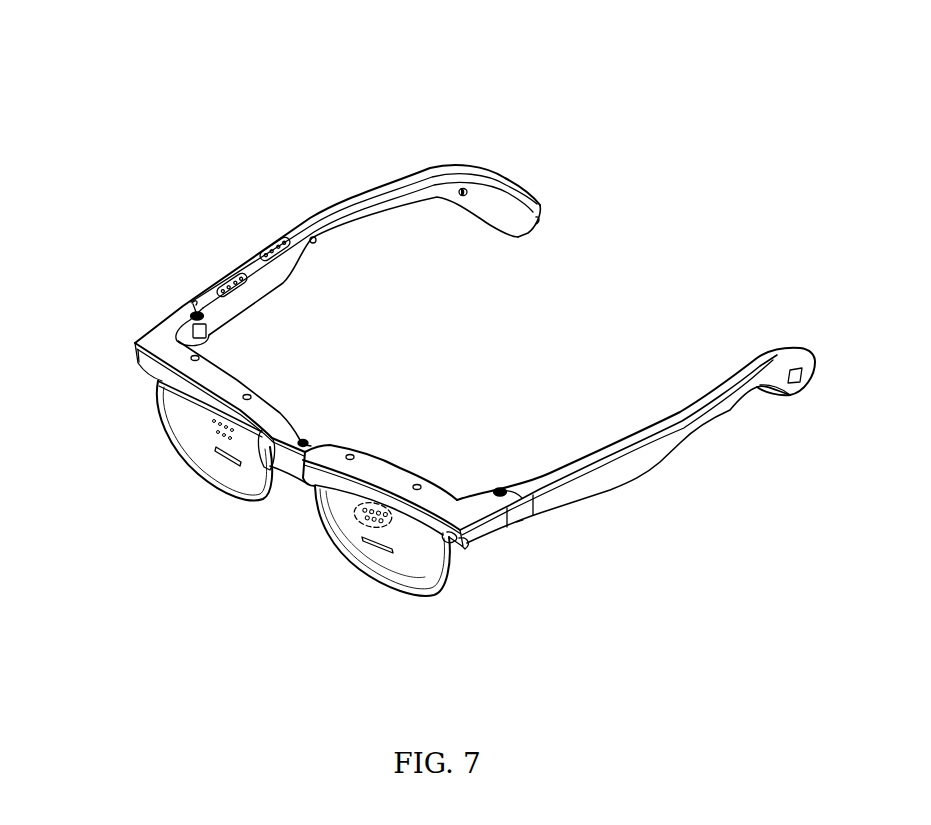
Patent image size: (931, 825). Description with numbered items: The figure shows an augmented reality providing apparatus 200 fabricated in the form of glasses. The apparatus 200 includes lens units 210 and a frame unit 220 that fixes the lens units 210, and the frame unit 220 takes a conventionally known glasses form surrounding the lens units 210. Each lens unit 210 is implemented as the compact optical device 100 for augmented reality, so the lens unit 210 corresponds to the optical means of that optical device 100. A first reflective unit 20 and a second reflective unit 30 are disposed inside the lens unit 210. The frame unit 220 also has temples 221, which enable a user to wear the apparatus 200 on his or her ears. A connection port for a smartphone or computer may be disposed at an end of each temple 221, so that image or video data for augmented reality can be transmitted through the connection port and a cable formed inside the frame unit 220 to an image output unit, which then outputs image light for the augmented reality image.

The augmented reality providing apparatus 200 is at (482, 124).
The optical device for augmented reality 100 is at (419, 562).
The first reflective unit 20 is at (373, 543).
The second reflective unit 30 is at (355, 507).
The lens unit 210 is at (452, 572).
The frame unit 220 is at (198, 366).
The temple 221 is at (746, 389).